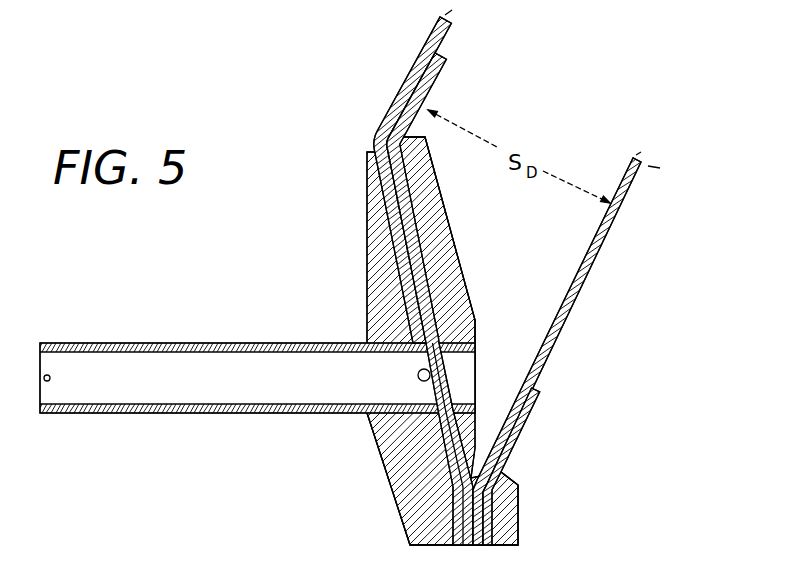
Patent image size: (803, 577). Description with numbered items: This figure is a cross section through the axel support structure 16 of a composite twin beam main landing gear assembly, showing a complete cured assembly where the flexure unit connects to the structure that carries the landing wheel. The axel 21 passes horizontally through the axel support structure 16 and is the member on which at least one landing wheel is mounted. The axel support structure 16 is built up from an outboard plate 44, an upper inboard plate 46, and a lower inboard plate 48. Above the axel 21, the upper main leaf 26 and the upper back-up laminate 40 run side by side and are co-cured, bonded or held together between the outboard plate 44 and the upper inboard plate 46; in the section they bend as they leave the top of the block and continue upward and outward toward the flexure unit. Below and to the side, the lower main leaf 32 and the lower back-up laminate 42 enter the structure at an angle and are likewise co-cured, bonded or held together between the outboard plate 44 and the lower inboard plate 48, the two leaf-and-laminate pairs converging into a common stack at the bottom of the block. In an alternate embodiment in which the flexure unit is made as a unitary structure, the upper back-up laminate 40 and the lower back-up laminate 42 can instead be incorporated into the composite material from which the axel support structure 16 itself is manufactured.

The axel support structure 16 is at (367, 229).
The axel 21 is at (183, 343).
The upper main leaf 26 is at (420, 62).
The lower main leaf 32 is at (549, 354).
The upper back-up laminate 40 is at (433, 88).
The lower back-up laminate 42 is at (530, 410).
The outboard plate 44 is at (393, 493).
The upper inboard plate 46 is at (441, 231).
The lower inboard plate 48 is at (510, 522).